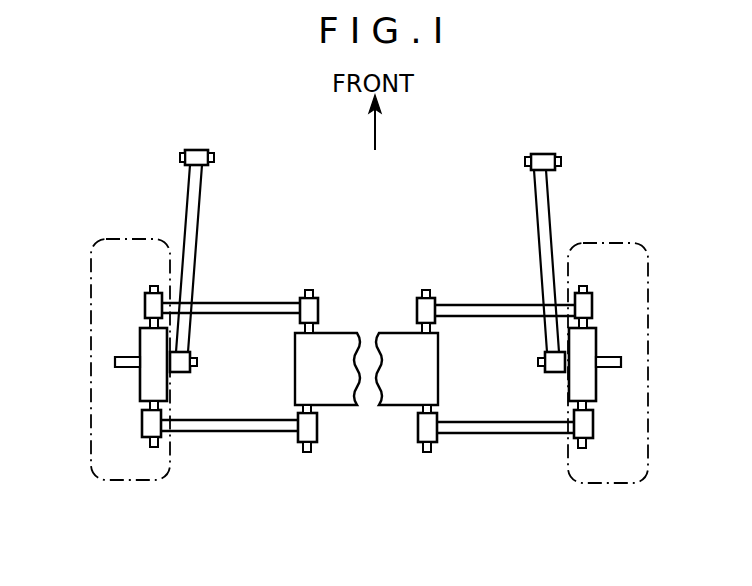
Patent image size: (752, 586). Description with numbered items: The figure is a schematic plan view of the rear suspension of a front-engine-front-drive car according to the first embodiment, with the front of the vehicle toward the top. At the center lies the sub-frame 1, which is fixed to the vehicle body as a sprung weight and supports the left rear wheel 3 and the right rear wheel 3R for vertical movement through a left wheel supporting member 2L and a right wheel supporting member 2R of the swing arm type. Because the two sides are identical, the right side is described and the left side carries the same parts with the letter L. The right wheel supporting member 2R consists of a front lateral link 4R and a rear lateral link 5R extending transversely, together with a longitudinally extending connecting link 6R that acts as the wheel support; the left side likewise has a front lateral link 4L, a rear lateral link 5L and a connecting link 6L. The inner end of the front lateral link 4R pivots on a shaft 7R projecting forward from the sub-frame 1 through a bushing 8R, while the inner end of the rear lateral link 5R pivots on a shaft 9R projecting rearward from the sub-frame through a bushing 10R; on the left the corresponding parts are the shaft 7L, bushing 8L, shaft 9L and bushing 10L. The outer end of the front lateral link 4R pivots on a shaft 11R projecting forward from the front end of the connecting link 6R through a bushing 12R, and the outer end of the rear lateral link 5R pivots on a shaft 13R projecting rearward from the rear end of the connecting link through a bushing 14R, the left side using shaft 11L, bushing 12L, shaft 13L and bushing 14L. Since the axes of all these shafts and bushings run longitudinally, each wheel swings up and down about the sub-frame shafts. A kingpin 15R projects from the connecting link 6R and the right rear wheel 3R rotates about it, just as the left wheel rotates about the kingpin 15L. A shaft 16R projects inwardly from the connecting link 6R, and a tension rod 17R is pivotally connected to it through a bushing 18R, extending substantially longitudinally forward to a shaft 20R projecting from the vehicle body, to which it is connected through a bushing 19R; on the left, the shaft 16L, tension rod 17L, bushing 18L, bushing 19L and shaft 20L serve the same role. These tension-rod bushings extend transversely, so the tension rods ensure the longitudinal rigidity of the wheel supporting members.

The sub-frame 1 is at (335, 340).
The left wheel supporting member 2L is at (257, 448).
The right wheel supporting member 2R is at (497, 448).
The left rear wheel 3 is at (90, 418).
The right rear wheel 3R is at (647, 428).
The front lateral link 4L is at (232, 303).
The front lateral link 4R is at (502, 305).
The rear lateral link 5L is at (218, 432).
The rear lateral link 5R is at (508, 434).
The connecting link 6L is at (150, 340).
The connecting link 6R is at (590, 348).
The shaft 7L is at (309, 290).
The shaft 7R is at (426, 290).
The bushing 8L is at (313, 312).
The bushing 8R is at (417, 308).
The shaft 9L is at (308, 452).
The shaft 9R is at (427, 452).
The bushing 10L is at (318, 427).
The bushing 10R is at (419, 428).
The shaft 11L is at (155, 286).
The shaft 11R is at (588, 286).
The bushing 12L is at (145, 303).
The bushing 12R is at (590, 310).
The shaft 13L is at (152, 447).
The shaft 13R is at (583, 448).
The bushing 14L is at (146, 430).
The bushing 14R is at (595, 435).
The kingpin 15L is at (112, 362).
The kingpin 15R is at (623, 368).
The shaft 16L is at (195, 362).
The shaft 16R is at (538, 362).
The tension rod 17L is at (201, 195).
The tension rod 17R is at (540, 208).
The bushing 18L is at (183, 373).
The bushing 18R is at (555, 373).
The bushing 19L is at (199, 150).
The bushing 19R is at (550, 154).
The shaft 20L is at (180, 157).
The shaft 20R is at (562, 161).